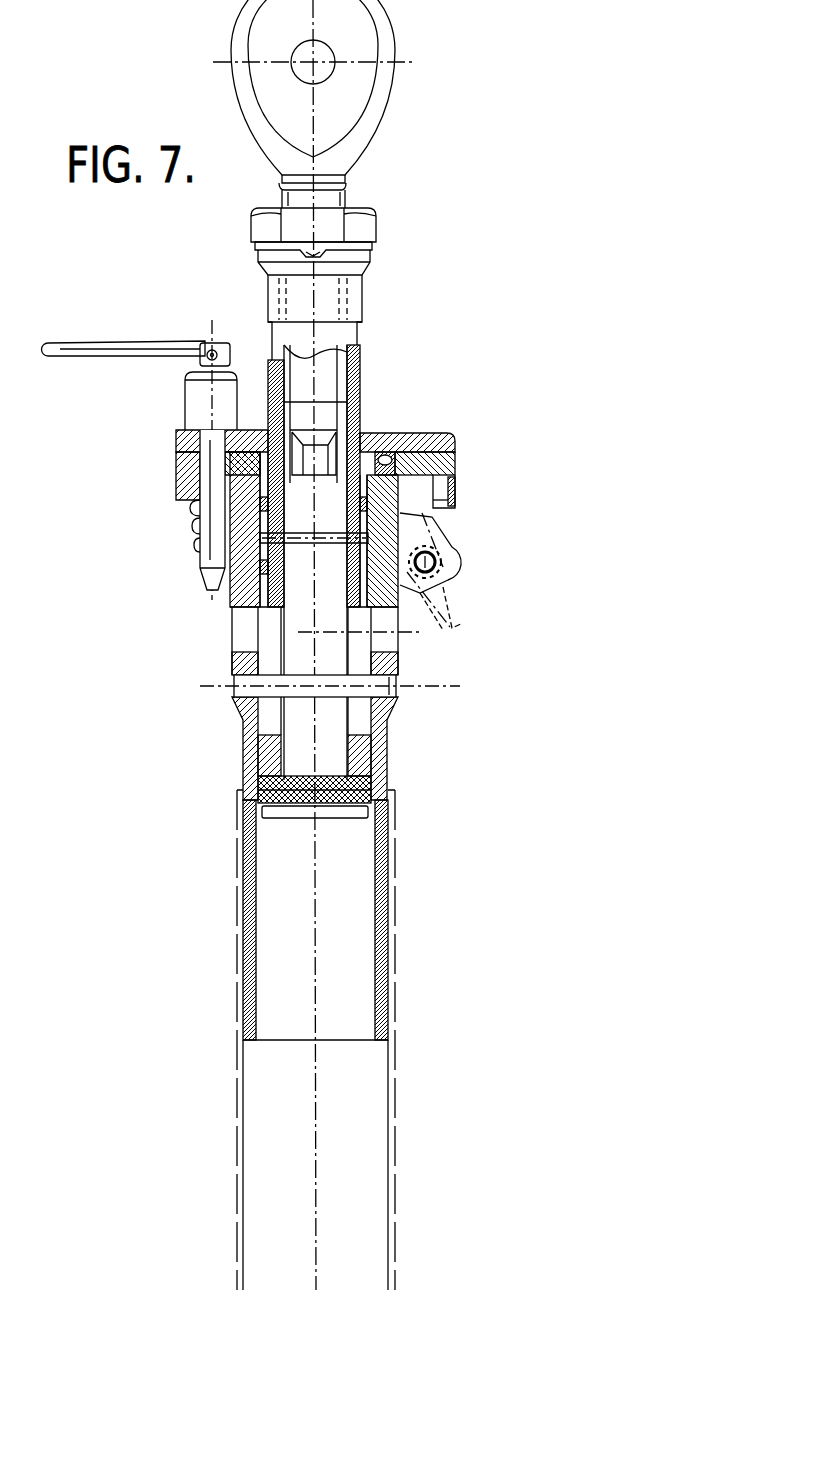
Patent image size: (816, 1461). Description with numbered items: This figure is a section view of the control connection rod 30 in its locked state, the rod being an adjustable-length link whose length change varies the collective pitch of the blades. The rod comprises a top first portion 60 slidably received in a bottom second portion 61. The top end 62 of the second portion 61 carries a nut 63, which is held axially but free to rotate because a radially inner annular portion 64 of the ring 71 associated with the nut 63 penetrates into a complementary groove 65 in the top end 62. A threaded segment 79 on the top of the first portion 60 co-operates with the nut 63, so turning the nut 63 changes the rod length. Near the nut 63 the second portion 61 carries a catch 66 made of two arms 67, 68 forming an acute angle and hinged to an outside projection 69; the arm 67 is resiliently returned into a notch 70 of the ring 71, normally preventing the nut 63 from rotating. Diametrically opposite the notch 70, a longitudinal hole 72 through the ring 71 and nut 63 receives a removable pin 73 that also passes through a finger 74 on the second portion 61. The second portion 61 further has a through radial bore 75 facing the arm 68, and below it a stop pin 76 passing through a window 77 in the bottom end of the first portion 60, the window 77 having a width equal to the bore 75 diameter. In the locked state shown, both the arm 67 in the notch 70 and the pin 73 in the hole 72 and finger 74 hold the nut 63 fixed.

The control connection rod 30 is at (200, 806).
The first portion 60 is at (356, 300).
The second portion 61 is at (372, 762).
The top end 62 is at (470, 582).
The nut 63 is at (323, 449).
The radially inner annular portion 64 is at (400, 442).
The complementary groove 65 is at (387, 454).
The catch 66 is at (460, 599).
The arm 67 is at (410, 522).
The arm 68 is at (460, 620).
The outside projection 69 is at (452, 563).
The notch 70 is at (443, 487).
The ring 71 is at (438, 462).
The longitudinal hole 72 is at (177, 478).
The removable pin 73 is at (196, 398).
The finger 74 is at (190, 520).
The radial bore 75 is at (232, 650).
The stop pin 76 is at (372, 692).
The window 77 is at (272, 742).
The threaded segment 79 is at (358, 432).